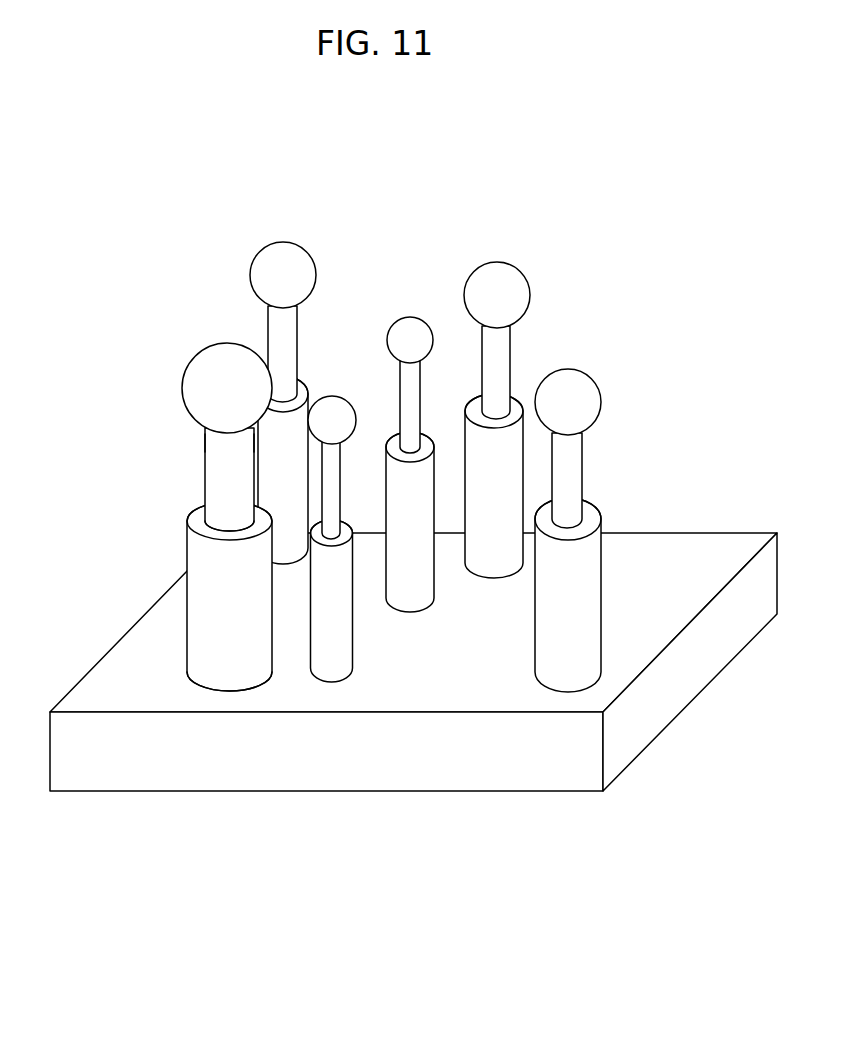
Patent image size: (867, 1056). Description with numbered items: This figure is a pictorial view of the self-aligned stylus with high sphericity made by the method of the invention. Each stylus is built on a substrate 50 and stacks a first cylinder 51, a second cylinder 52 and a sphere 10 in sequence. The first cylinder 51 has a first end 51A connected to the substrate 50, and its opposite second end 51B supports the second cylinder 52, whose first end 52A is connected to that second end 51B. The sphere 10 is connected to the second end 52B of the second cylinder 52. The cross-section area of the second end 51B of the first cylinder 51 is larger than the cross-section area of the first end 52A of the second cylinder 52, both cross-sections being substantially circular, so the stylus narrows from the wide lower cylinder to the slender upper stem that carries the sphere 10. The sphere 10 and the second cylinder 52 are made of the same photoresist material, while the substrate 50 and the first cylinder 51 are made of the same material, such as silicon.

The sphere 10 is at (192, 375).
The substrate 50 is at (240, 782).
The first cylinder 51 is at (187, 595).
The first end of the first cylinder 51A is at (212, 675).
The second end of the first cylinder 51B is at (220, 545).
The second cylinder 52 is at (205, 470).
The first end of the second cylinder 52A is at (223, 518).
The second end of the second cylinder 52B is at (223, 443).